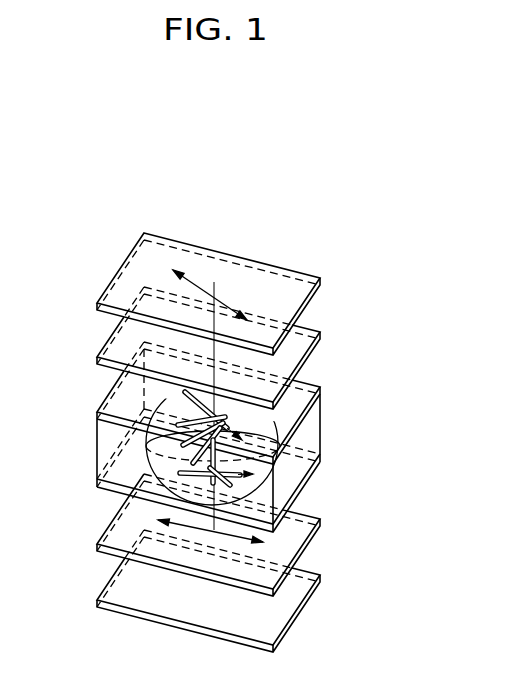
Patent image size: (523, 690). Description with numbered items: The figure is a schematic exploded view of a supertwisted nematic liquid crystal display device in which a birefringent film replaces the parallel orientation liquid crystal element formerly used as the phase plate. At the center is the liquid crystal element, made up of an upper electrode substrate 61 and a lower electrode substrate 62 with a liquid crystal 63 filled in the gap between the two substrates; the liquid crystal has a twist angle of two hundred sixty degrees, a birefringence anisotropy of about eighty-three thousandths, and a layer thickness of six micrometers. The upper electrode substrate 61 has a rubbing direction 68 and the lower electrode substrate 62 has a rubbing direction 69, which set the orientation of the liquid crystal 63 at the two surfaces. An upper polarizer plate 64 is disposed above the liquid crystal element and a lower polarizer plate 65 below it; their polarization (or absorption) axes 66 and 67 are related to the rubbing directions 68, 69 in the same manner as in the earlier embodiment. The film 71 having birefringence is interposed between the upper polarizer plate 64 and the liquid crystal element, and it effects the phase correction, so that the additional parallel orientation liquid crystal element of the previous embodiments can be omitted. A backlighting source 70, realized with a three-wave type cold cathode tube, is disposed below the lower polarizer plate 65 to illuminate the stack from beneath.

The upper electrode substrate 61 is at (320, 388).
The lower electrode substrate 62 is at (322, 467).
The liquid crystal 63 is at (178, 426).
The upper polarizer plate 64 is at (320, 286).
The lower polarizer plate 65 is at (310, 548).
The polarization axis of upper polarizer plate 66 is at (193, 283).
The polarization axis of lower polarizer plate 67 is at (182, 528).
The rubbing direction of upper electrode substrate 68 is at (246, 438).
The rubbing direction of lower electrode substrate 69 is at (255, 476).
The backlighting source 70 is at (303, 610).
The film having birefringence 71 is at (320, 338).